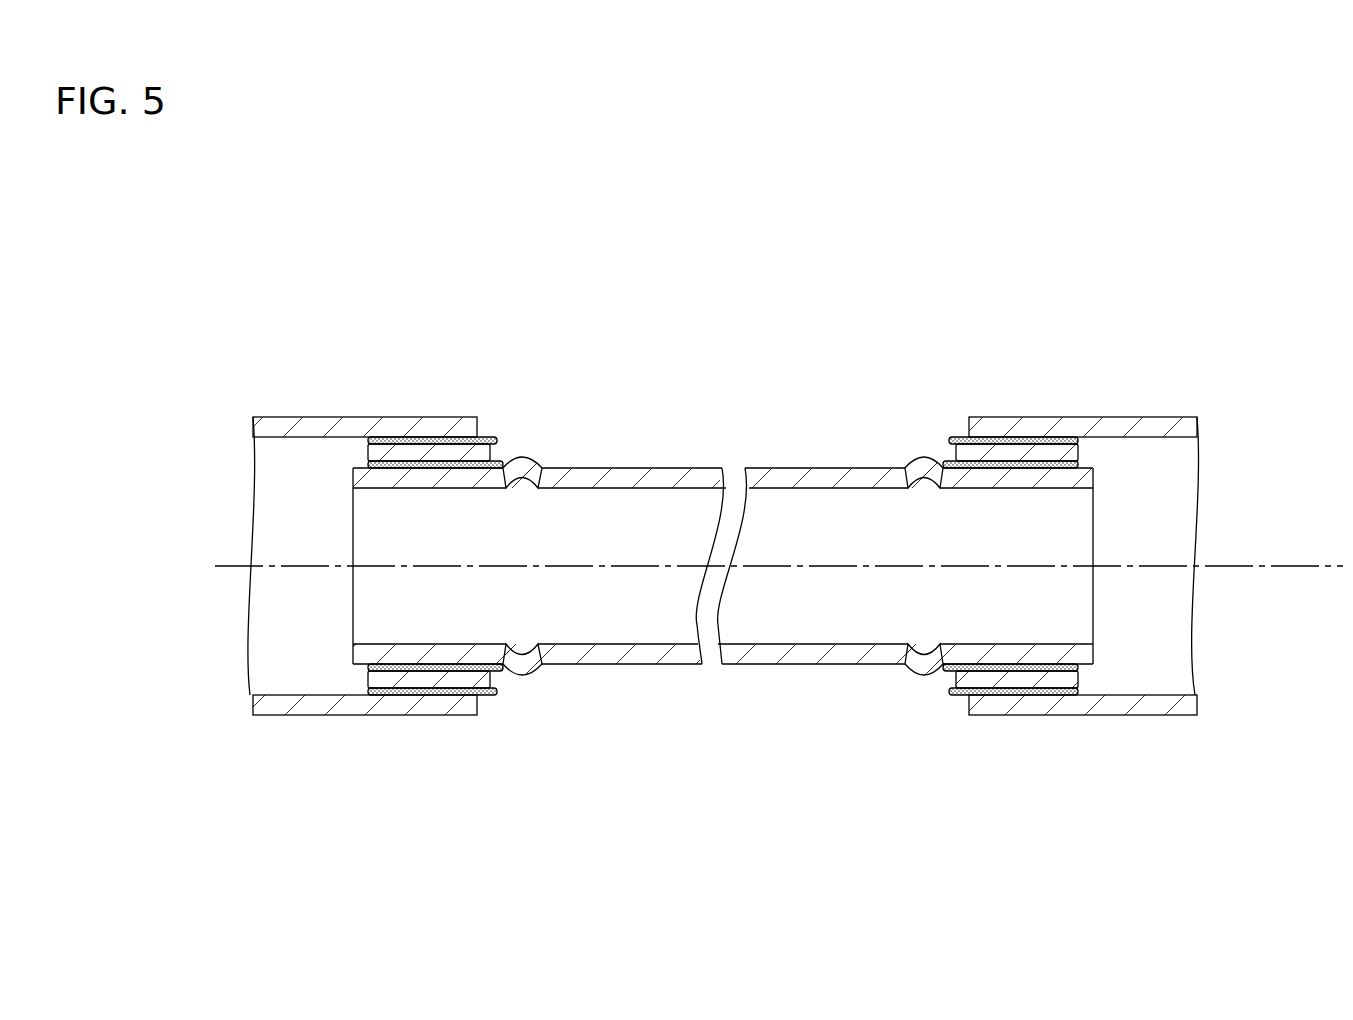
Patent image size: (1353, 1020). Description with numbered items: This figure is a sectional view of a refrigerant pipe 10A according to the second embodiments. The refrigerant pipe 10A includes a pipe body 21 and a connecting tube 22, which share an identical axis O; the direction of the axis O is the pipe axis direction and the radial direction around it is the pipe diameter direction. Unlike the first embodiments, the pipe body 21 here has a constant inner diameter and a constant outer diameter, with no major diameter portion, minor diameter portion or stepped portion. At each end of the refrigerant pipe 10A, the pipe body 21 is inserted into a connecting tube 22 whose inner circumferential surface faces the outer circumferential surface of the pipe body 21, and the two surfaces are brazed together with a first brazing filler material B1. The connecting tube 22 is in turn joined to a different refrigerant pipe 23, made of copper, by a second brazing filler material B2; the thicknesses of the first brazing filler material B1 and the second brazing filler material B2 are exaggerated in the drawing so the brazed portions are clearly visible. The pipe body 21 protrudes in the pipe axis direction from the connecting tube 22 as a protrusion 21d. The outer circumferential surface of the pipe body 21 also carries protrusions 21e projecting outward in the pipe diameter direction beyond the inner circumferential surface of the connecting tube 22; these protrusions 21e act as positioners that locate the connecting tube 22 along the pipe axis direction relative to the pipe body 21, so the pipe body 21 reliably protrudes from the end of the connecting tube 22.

The refrigerant pipe 10A is at (862, 282).
The pipe body 21 is at (720, 526).
The protrusion 21d is at (357, 654).
The protrusions 21e is at (521, 455).
The connecting tube 22 is at (420, 454).
The different refrigerant pipe 23 is at (297, 430).
The first brazing filler material B1 is at (423, 670).
The second brazing filler material B2 is at (380, 694).
The axis O is at (1297, 569).